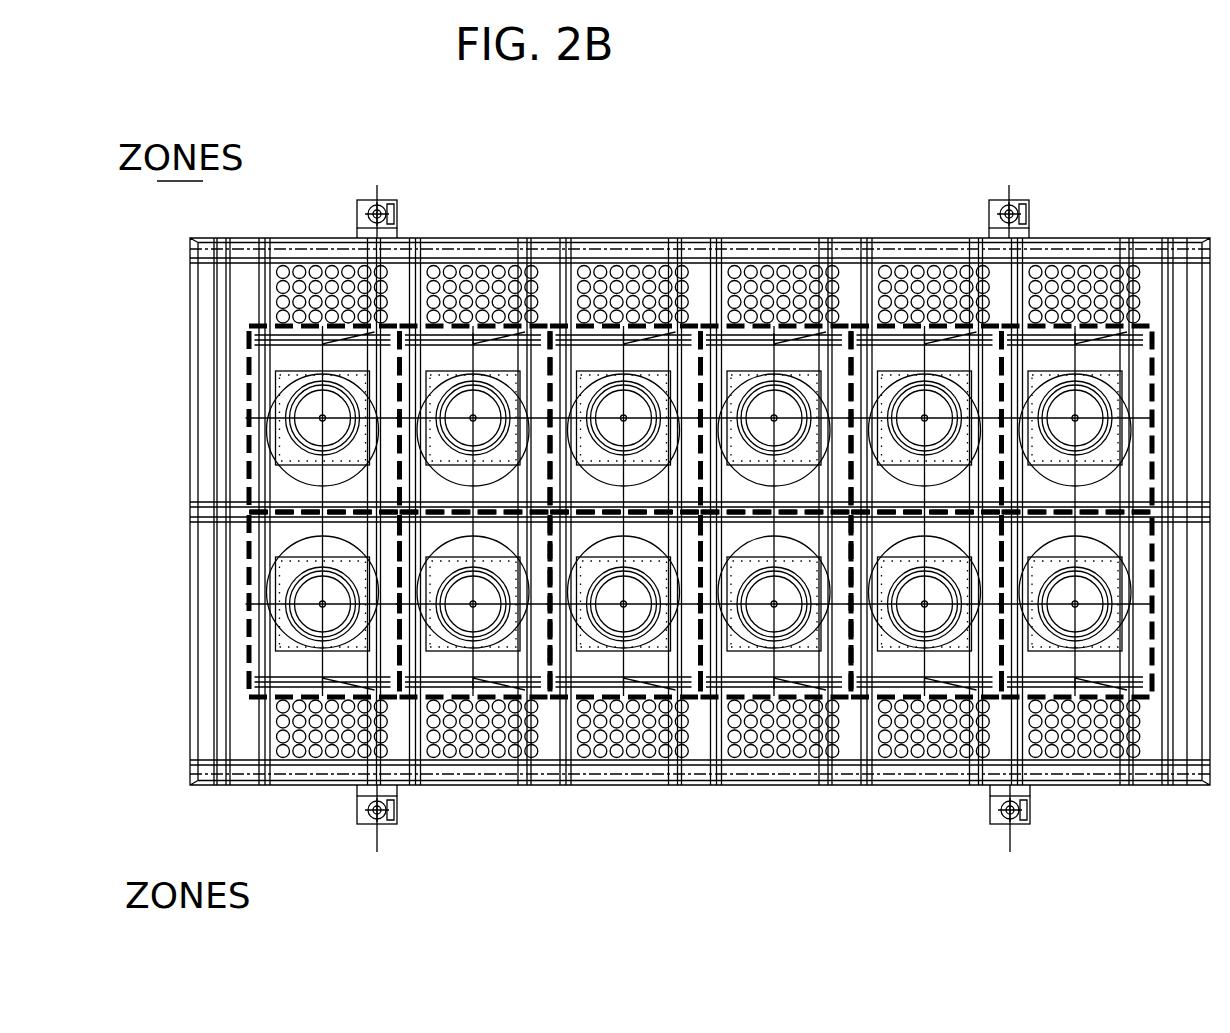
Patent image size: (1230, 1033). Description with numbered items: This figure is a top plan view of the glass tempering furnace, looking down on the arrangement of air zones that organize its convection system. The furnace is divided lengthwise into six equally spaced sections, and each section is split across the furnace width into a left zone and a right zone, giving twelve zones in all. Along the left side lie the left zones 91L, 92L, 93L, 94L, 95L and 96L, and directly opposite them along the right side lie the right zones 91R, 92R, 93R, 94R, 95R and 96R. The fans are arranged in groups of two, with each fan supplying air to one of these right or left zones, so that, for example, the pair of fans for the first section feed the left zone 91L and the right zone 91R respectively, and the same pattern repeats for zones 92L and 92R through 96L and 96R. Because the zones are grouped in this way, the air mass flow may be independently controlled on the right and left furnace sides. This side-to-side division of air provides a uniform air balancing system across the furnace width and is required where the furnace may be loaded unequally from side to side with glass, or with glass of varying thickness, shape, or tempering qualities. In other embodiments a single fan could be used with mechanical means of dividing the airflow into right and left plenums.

The left zone 91L is at (322, 365).
The left zone 92L is at (469, 362).
The left zone 93L is at (619, 362).
The left zone 94L is at (770, 360).
The left zone 95L is at (915, 358).
The left zone 96L is at (1093, 360).
The right zone 91R is at (319, 656).
The right zone 92R is at (470, 656).
The right zone 93R is at (620, 656).
The right zone 94R is at (771, 656).
The right zone 95R is at (905, 648).
The right zone 96R is at (1066, 657).